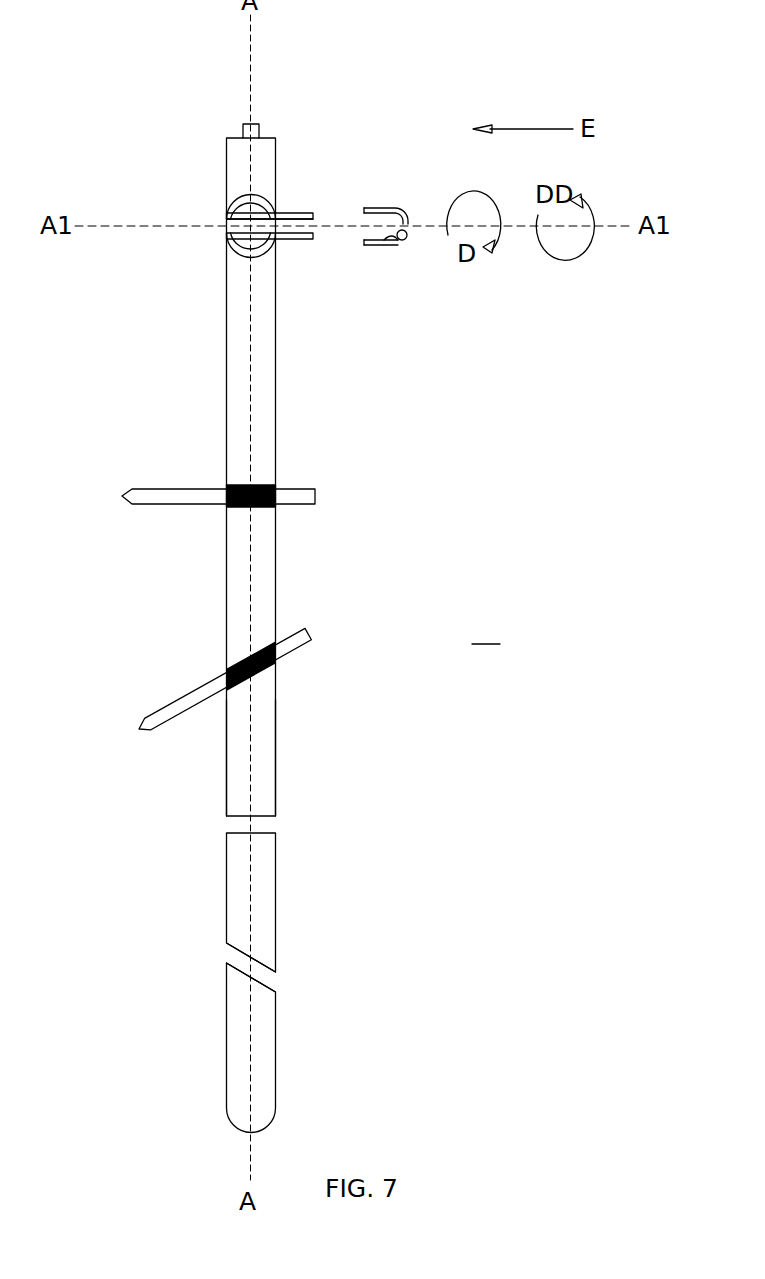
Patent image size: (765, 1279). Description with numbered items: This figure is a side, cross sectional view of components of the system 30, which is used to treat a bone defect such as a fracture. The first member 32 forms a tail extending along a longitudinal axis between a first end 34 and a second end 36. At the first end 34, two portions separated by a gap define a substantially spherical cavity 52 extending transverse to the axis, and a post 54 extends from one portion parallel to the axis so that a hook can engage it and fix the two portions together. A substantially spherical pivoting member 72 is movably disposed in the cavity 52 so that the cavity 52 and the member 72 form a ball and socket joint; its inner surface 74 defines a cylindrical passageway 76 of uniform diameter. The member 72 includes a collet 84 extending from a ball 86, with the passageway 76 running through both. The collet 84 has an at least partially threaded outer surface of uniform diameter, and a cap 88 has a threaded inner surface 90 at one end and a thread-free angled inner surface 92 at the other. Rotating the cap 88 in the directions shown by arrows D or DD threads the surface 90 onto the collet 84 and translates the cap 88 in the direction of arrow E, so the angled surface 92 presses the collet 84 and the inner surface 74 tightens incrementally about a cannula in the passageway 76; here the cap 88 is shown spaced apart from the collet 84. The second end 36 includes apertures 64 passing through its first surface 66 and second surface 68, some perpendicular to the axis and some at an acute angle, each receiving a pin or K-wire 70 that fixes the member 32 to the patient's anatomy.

The system 30 is at (488, 629).
The first member 32 is at (190, 359).
The first end 34 is at (222, 149).
The second end 36 is at (265, 1117).
The spherical cavity 52 is at (212, 215).
The post 54 is at (262, 126).
The aperture 64 is at (300, 512).
The first surface 66 is at (275, 905).
The second surface 68 is at (275, 759).
The pin or K-wire 70 is at (152, 462).
The pivoting member 72 is at (258, 246).
The inner surface 74 is at (227, 231).
The passageway 76 is at (330, 212).
The collet 84 is at (290, 239).
The ball 86 is at (273, 199).
The cap 88 is at (377, 262).
The threaded inner surface 90 is at (397, 241).
The angled inner surface 92 is at (405, 238).